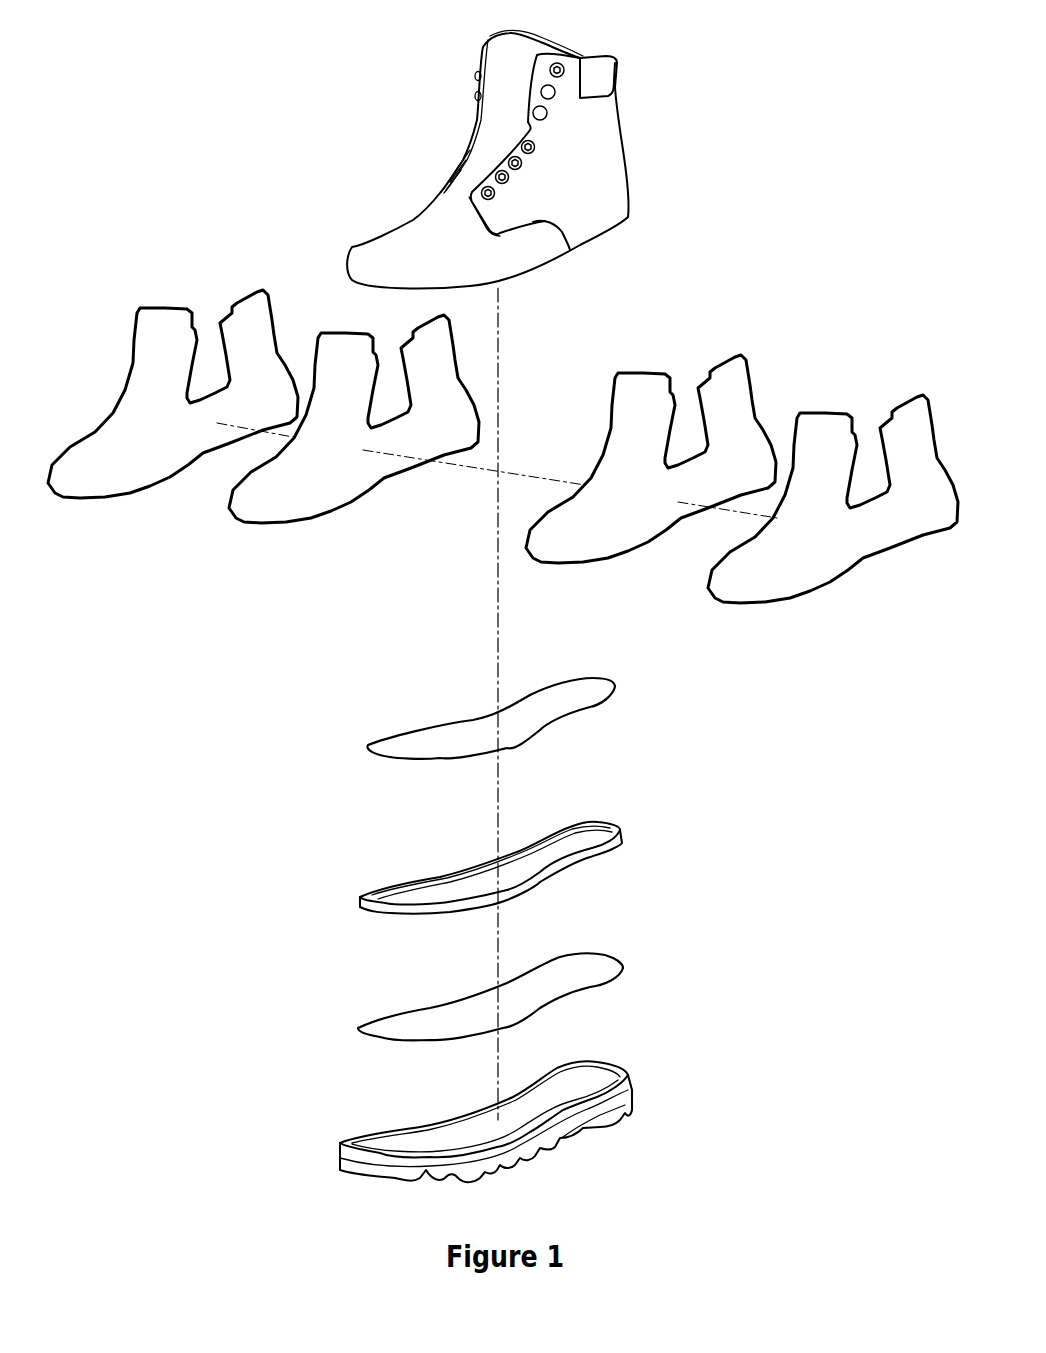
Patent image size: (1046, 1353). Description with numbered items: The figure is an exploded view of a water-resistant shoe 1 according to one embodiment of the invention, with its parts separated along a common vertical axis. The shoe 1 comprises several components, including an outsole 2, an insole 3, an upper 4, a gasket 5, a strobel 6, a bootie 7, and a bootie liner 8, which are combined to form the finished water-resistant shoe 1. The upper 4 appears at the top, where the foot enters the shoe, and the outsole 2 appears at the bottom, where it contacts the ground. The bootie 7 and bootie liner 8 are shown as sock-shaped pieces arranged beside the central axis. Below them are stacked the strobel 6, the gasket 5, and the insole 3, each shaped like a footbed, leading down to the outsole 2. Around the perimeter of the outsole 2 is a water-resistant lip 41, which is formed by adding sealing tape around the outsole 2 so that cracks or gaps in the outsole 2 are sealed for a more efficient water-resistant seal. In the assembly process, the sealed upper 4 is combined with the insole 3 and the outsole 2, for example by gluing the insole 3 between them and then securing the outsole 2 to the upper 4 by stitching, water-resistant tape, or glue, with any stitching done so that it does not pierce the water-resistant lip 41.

The water-resistant shoe 1 is at (770, 165).
The outsole 2 is at (337, 1153).
The insole 3 is at (353, 1028).
The upper 4 is at (432, 160).
The water-resistant lip 41 is at (627, 1070).
The gasket 5 is at (357, 900).
The strobel 6 is at (362, 745).
The bootie 7 is at (175, 303).
The bootie liner 8 is at (340, 320).